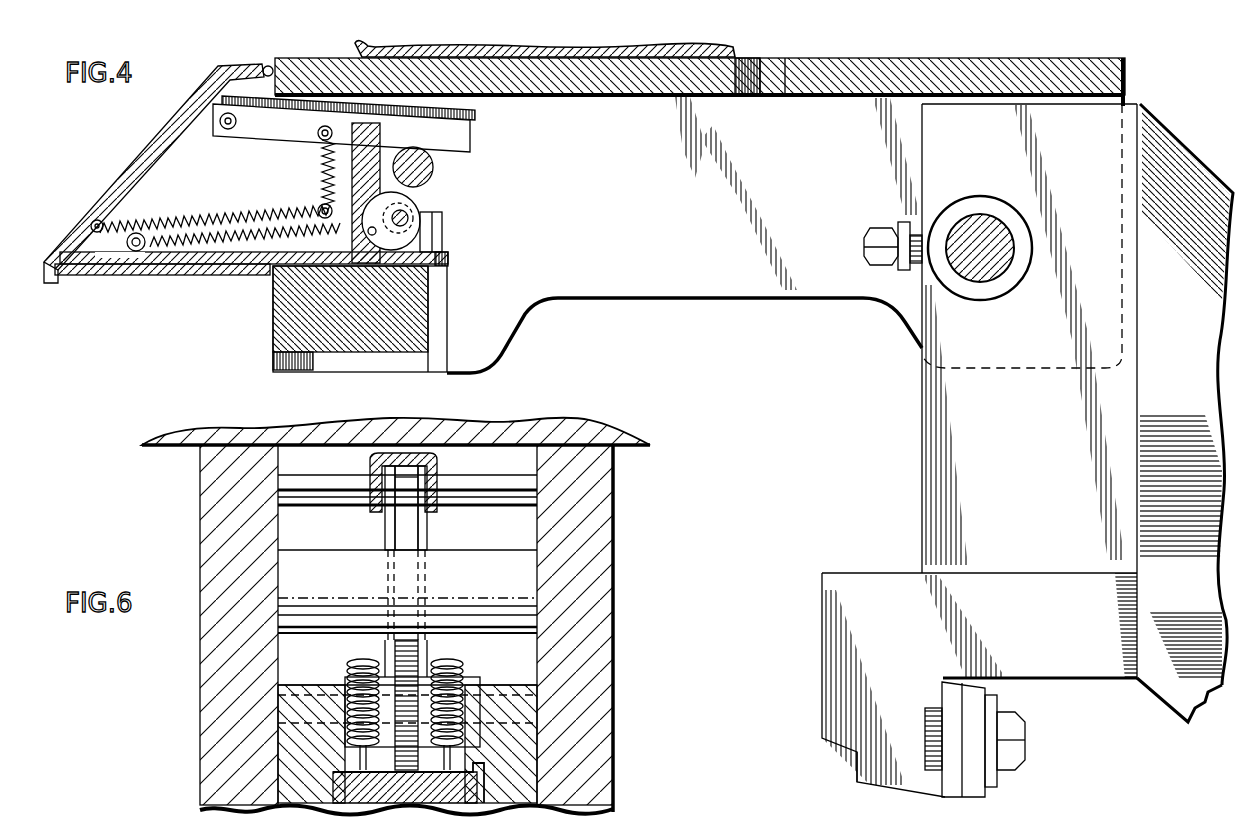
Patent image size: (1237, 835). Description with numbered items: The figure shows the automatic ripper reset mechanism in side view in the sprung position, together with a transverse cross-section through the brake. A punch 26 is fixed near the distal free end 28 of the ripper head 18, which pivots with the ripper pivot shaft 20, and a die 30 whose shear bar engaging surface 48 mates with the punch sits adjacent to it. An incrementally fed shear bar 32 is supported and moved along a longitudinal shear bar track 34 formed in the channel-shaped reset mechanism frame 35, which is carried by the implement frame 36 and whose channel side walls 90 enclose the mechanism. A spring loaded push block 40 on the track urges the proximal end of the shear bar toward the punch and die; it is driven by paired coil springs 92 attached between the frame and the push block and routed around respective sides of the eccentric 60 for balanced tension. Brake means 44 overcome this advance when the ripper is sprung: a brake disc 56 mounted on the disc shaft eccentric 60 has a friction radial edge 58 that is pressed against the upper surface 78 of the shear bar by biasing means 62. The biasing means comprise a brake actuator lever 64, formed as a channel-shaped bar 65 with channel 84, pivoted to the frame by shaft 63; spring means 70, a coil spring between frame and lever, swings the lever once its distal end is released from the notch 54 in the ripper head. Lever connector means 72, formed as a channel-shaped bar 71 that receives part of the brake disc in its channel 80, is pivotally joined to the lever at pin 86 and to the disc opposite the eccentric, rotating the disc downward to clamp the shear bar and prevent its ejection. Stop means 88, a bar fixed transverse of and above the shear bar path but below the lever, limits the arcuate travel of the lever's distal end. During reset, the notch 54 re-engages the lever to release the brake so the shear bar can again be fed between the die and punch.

In FIG. 4, the ripper head 18 is at (1030, 511).
In FIG. 4, the ripper pivot shaft 20 is at (1000, 243).
In FIG. 4, the punch 26 is at (970, 797).
In FIG. 4, the distal free end 28 is at (892, 644).
In FIG. 4, the die 30 is at (425, 215).
In FIG. 4, the shear bar 32 is at (190, 265).
In FIG. 6, the shear bar 32 is at (335, 770).
In FIG. 6, the shear bar track 34 is at (340, 800).
In FIG. 4, the reset mechanism frame 35 is at (118, 190).
In FIG. 6, the reset mechanism frame 35 is at (595, 790).
In FIG. 4, the implement frame 36 is at (585, 58).
In FIG. 4, the spring loaded push block 40 is at (92, 275).
In FIG. 4, the brake means 44 is at (290, 171).
In FIG. 4, the shear bar engaging surface 48 is at (440, 300).
In FIG. 4, the notch 54 is at (870, 750).
In FIG. 4, the brake disc 56 is at (420, 240).
In FIG. 6, the brake disc 56 is at (448, 734).
In FIG. 6, the friction radial edge 58 is at (395, 700).
In FIG. 4, the eccentric 60 is at (405, 208).
In FIG. 6, the eccentric 60 is at (525, 710).
In FIG. 4, the biasing means 62 is at (340, 238).
In FIG. 4, the shaft 63 is at (248, 72).
In FIG. 6, the shaft 63 is at (505, 490).
In FIG. 4, the brake actuator lever 64 is at (470, 135).
In FIG. 6, the brake actuator lever 64 is at (437, 462).
In FIG. 6, the channel-shaped bar 65 is at (370, 470).
In FIG. 4, the spring means 70 is at (300, 188).
In FIG. 6, the channel-shaped bar 71 is at (387, 533).
In FIG. 4, the lever connector means 72 is at (322, 148).
In FIG. 6, the lever connector means 72 is at (385, 652).
In FIG. 6, the upper surface 78 is at (480, 752).
In FIG. 6, the channel 80 is at (395, 628).
In FIG. 6, the channel 84 is at (402, 463).
In FIG. 6, the pin 86 is at (405, 488).
In FIG. 4, the stop means 88 is at (425, 160).
In FIG. 6, the stop means 88 is at (484, 601).
In FIG. 6, the channel side walls 90 is at (210, 552).
In FIG. 4, the coil springs 92 is at (215, 212).
In FIG. 6, the coil springs 92 is at (355, 665).